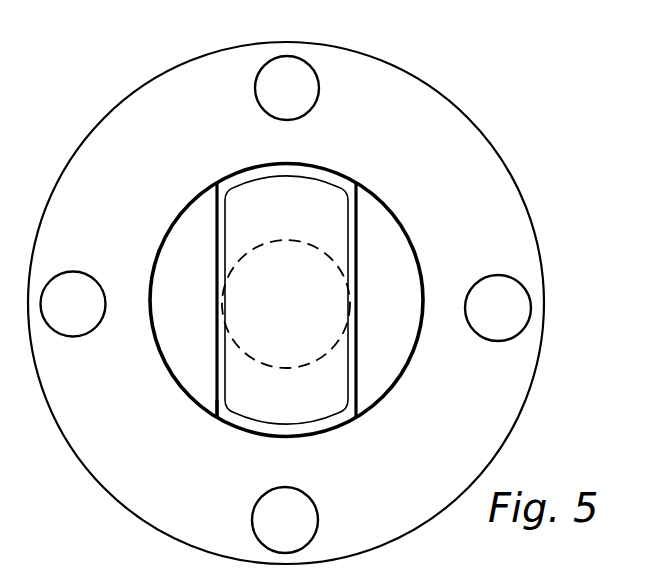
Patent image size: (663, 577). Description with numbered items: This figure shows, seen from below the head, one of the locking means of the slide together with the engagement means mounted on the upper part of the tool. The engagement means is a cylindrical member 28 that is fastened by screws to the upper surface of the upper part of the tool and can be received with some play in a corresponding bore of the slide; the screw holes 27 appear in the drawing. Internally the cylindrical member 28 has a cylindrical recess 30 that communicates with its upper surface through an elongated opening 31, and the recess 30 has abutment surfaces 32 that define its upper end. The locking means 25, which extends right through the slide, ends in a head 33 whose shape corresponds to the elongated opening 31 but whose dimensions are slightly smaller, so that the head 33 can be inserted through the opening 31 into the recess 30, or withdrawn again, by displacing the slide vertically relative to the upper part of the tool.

The locking means 25 is at (308, 320).
The bolt holes 27 is at (313, 517).
The cylindrical member 28 is at (422, 115).
The cylindrical recess 30 is at (190, 388).
The elongated opening 31 is at (312, 173).
The abutment surfaces 32 is at (181, 284).
The head 33 is at (342, 394).